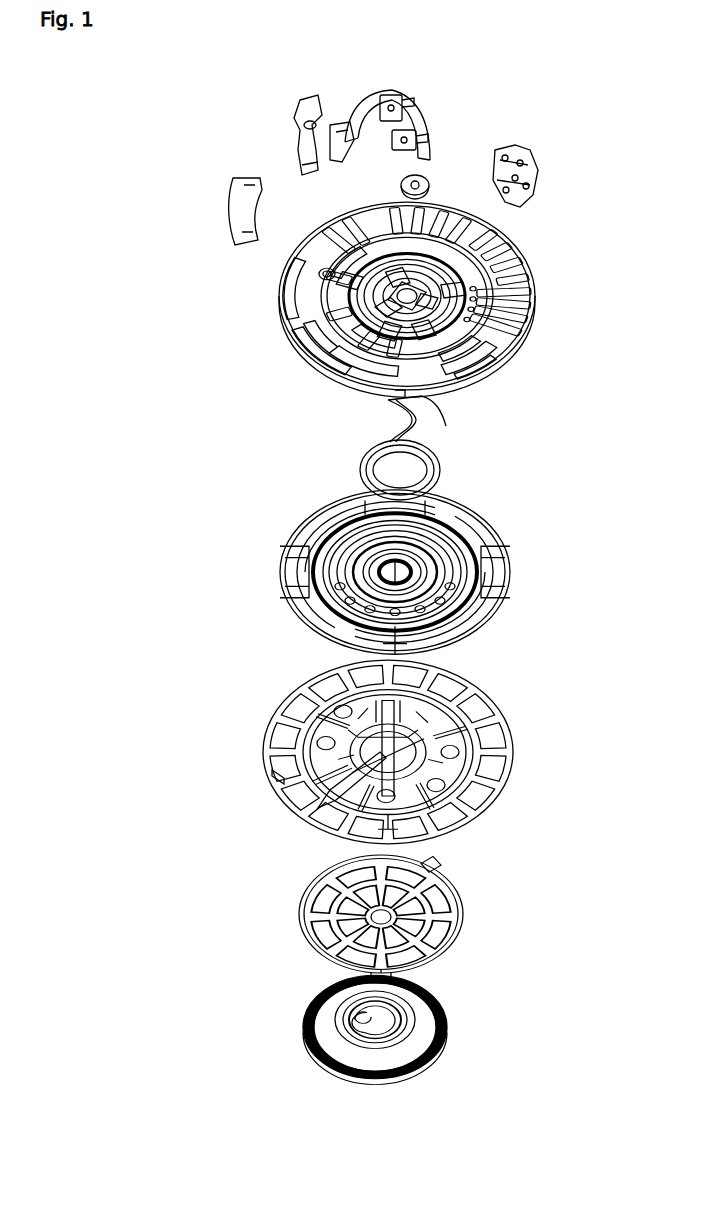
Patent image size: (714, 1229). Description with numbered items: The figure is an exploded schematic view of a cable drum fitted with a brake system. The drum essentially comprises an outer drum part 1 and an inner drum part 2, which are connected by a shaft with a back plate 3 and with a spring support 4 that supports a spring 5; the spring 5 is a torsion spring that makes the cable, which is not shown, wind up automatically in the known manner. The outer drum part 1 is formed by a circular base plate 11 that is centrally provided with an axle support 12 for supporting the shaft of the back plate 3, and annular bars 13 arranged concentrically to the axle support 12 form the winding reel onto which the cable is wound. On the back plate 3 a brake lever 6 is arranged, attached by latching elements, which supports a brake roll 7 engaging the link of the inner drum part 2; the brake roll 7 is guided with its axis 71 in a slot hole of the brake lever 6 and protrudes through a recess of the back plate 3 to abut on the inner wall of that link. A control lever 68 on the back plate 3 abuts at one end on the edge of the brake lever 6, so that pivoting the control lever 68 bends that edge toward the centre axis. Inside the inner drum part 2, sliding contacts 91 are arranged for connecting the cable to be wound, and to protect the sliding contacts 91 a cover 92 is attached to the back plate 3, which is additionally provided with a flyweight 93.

The outer drum part 1 is at (503, 735).
The inner drum part 2 is at (513, 575).
The back plate 3 is at (535, 312).
The spring support 4 is at (462, 905).
The spring 5 is at (448, 1022).
The brake lever 6 is at (386, 88).
The brake roll 7 is at (430, 177).
The circular base plate 11 is at (300, 757).
The axle support 12 is at (455, 703).
The annular bars 13 is at (310, 817).
The control lever 68 is at (296, 112).
The axis 71 is at (430, 186).
The sliding contacts 91 is at (445, 452).
The cover 92 is at (538, 176).
The flyweight 93 is at (230, 215).